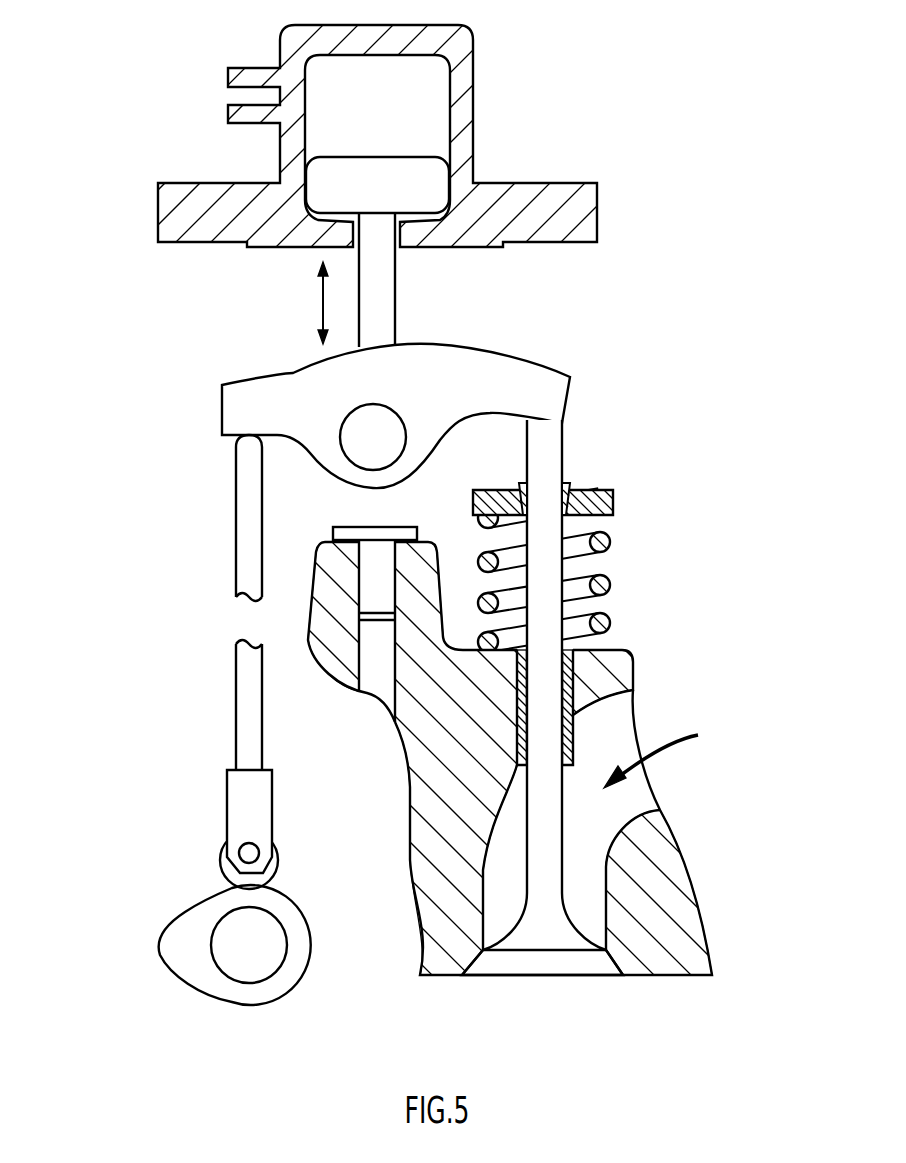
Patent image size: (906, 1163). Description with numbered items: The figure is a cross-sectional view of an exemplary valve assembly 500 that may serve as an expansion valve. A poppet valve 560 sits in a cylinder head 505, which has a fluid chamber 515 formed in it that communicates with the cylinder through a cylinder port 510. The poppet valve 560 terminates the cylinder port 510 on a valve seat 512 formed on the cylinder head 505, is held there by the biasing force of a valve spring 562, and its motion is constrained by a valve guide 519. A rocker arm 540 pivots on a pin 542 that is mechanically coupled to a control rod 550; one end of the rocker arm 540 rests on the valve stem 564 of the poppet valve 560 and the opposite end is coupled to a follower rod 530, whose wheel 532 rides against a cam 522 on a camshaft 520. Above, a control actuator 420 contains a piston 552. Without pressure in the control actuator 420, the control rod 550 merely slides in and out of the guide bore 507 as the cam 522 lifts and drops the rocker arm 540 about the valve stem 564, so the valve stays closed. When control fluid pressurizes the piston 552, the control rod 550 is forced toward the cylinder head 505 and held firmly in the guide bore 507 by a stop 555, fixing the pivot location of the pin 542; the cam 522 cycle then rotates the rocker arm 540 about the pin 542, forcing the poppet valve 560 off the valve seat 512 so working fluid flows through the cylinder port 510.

The valve assembly 500 is at (118, 385).
The control actuator 420 is at (467, 112).
The piston 552 is at (380, 170).
The control rod 550 is at (383, 317).
The rocker arm 540 is at (518, 362).
The pin 542 is at (388, 418).
The valve stem 564 is at (548, 457).
The stop 555 is at (415, 535).
The valve spring 562 is at (610, 543).
The guide bore 507 is at (376, 687).
The fluid chamber 515 is at (610, 698).
The valve guide 519 is at (571, 723).
The cylinder head 505 is at (690, 897).
The follower rod 530 is at (245, 725).
The wheel 532 is at (220, 855).
The camshaft 520 is at (275, 940).
The cam 522 is at (277, 982).
The valve seat 512 is at (462, 975).
The poppet valve 560 is at (600, 975).
The cylinder port 510 is at (545, 1000).